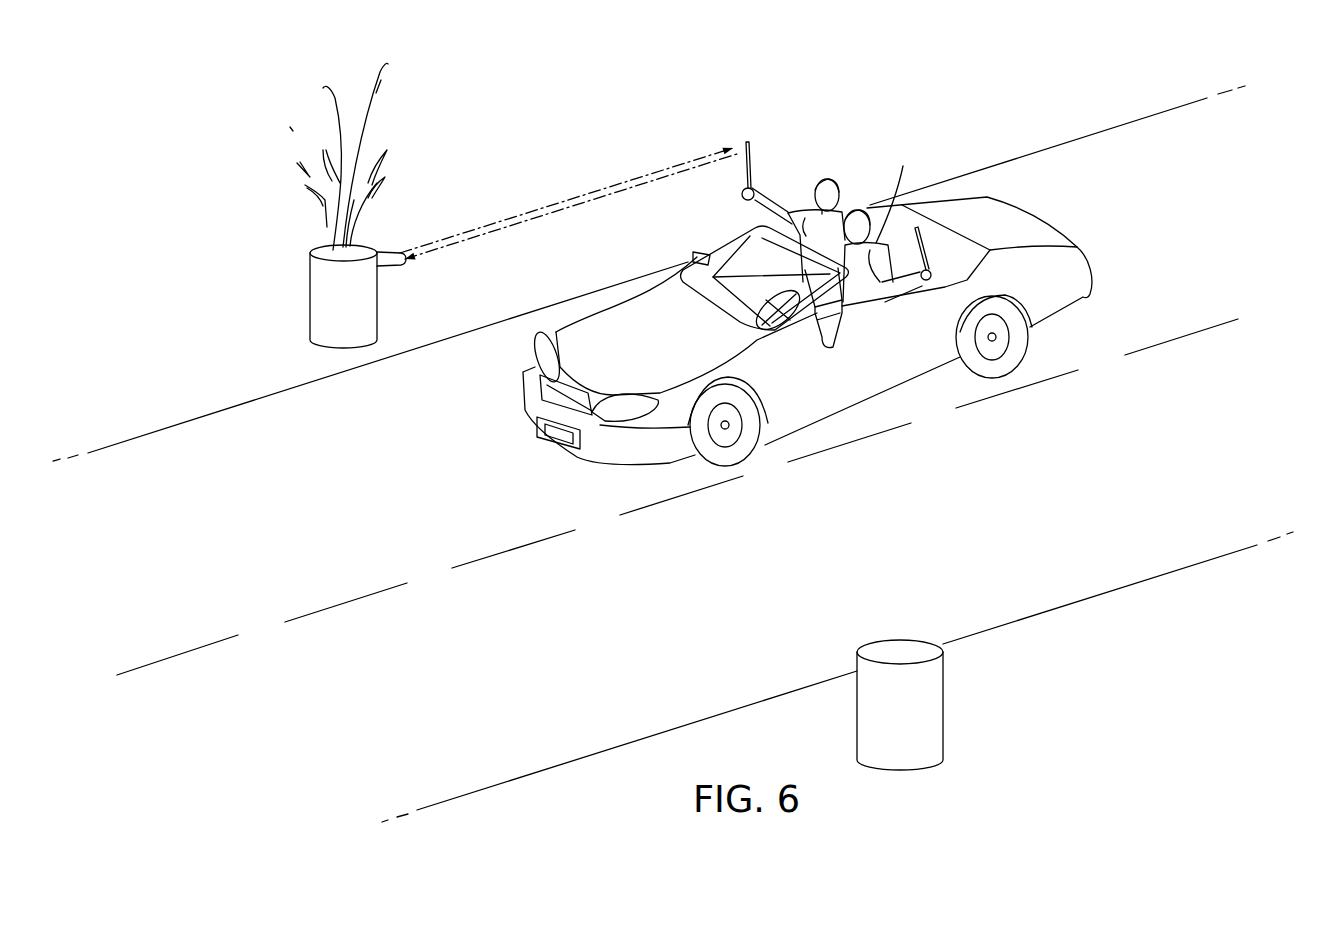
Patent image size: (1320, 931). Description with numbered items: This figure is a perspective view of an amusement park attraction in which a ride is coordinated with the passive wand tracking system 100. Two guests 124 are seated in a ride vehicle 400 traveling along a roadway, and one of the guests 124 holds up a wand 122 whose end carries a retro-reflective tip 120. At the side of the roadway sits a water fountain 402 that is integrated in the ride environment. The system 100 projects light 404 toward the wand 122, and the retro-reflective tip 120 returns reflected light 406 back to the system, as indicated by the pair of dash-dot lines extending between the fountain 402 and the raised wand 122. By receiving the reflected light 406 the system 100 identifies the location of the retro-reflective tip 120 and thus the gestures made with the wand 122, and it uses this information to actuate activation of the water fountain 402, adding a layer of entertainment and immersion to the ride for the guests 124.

The system 100 is at (257, 266).
The retro-reflective tip 120 is at (746, 138).
The wand 122 is at (760, 150).
The guest 124 is at (845, 212).
The ride vehicle 400 is at (1017, 220).
The water fountain 402 is at (308, 288).
The projected light 404 is at (512, 210).
The reflected light 406 is at (543, 228).